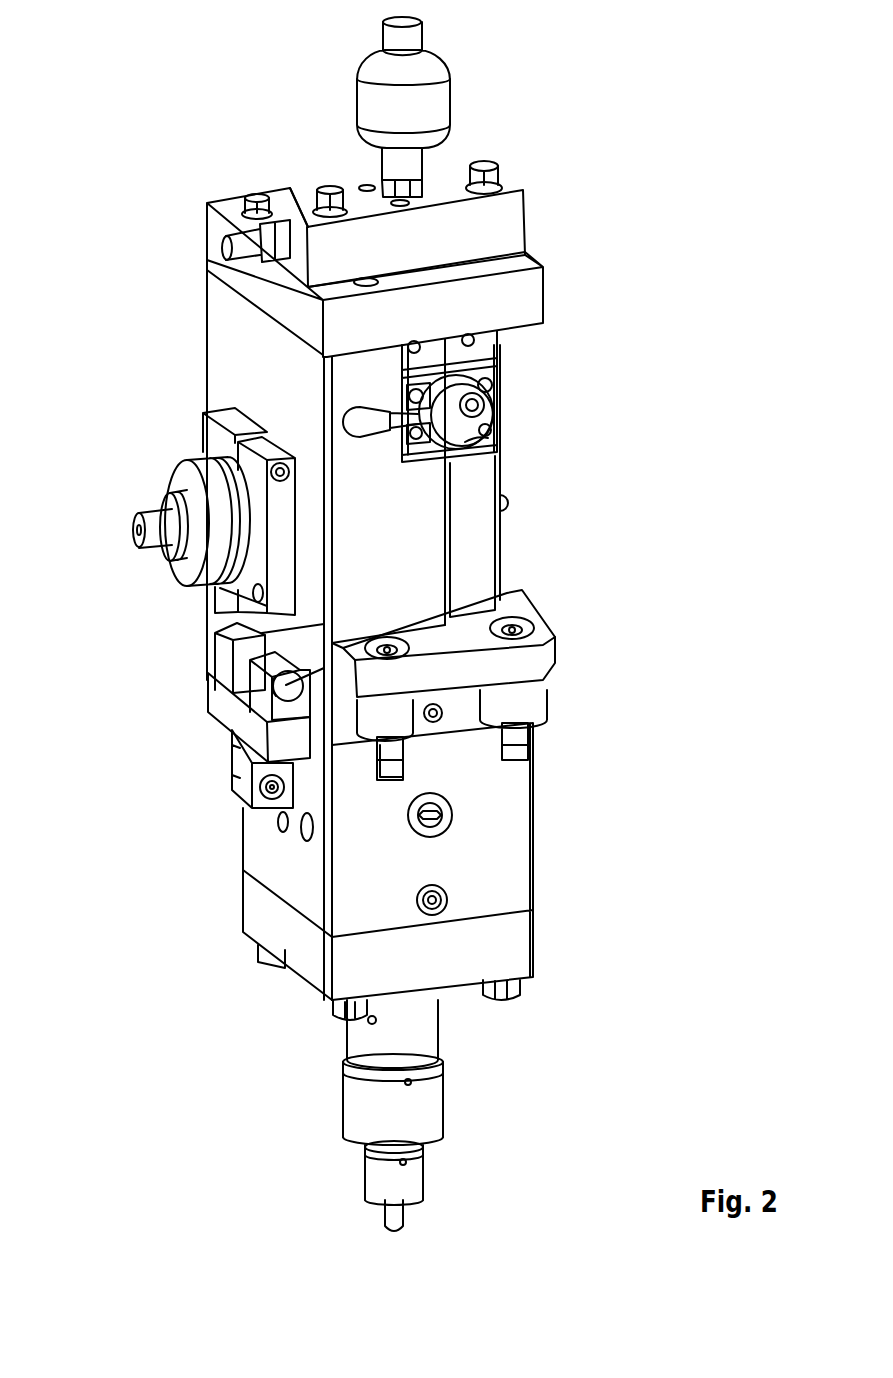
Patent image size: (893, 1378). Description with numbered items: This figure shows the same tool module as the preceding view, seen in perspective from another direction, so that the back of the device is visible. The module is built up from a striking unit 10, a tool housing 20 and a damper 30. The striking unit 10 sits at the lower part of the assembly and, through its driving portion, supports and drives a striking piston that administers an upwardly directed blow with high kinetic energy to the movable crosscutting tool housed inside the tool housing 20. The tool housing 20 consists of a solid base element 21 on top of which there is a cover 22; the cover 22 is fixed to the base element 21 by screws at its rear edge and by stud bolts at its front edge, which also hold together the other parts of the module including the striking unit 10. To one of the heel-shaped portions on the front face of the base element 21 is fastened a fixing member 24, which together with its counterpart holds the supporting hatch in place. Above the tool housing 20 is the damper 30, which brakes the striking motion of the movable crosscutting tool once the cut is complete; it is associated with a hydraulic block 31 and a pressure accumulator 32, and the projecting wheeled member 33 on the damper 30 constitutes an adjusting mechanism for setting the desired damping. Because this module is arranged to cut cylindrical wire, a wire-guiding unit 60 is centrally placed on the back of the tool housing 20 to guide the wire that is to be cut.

The striking unit 10 is at (503, 877).
The tool housing 20 is at (359, 508).
The base element 21 is at (418, 595).
The cover 22 is at (487, 298).
The fixing member 24 is at (468, 550).
The damper 30 is at (447, 350).
The hydraulic block 31 is at (477, 240).
The pressure accumulator 32 is at (420, 112).
The projecting wheeled member 33 is at (466, 431).
The wire-guiding unit 60 is at (173, 597).